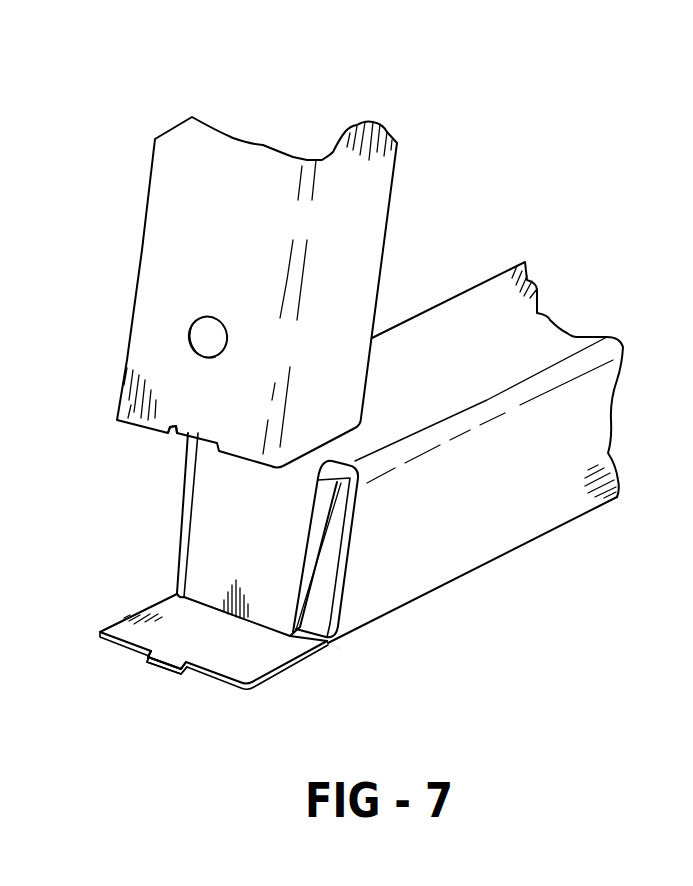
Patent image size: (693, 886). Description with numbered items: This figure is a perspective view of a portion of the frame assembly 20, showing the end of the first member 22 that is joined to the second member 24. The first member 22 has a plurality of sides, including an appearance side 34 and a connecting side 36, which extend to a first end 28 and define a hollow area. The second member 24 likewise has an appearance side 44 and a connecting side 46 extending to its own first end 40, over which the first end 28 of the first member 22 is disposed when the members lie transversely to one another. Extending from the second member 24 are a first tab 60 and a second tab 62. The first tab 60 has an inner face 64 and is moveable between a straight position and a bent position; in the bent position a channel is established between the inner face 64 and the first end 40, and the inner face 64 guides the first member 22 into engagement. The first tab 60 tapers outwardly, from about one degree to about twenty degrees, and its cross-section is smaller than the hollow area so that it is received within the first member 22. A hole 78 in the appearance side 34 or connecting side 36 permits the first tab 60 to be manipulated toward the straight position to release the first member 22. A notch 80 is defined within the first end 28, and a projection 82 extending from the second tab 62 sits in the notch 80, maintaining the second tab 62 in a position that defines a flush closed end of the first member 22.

The frame assembly 20 is at (426, 173).
The first member 22 is at (134, 186).
The second member 24 is at (440, 320).
The first end 28 is at (107, 396).
The appearance side 34 is at (355, 282).
The connecting side 36 is at (237, 234).
The first end 40 is at (338, 653).
The appearance side 44 is at (497, 504).
The connecting side 46 is at (457, 369).
The first tab 60 is at (203, 528).
The second tab 62 is at (243, 662).
The inner face 64 is at (312, 578).
The hole 78 is at (208, 316).
The notch 80 is at (182, 432).
The projection 82 is at (152, 662).